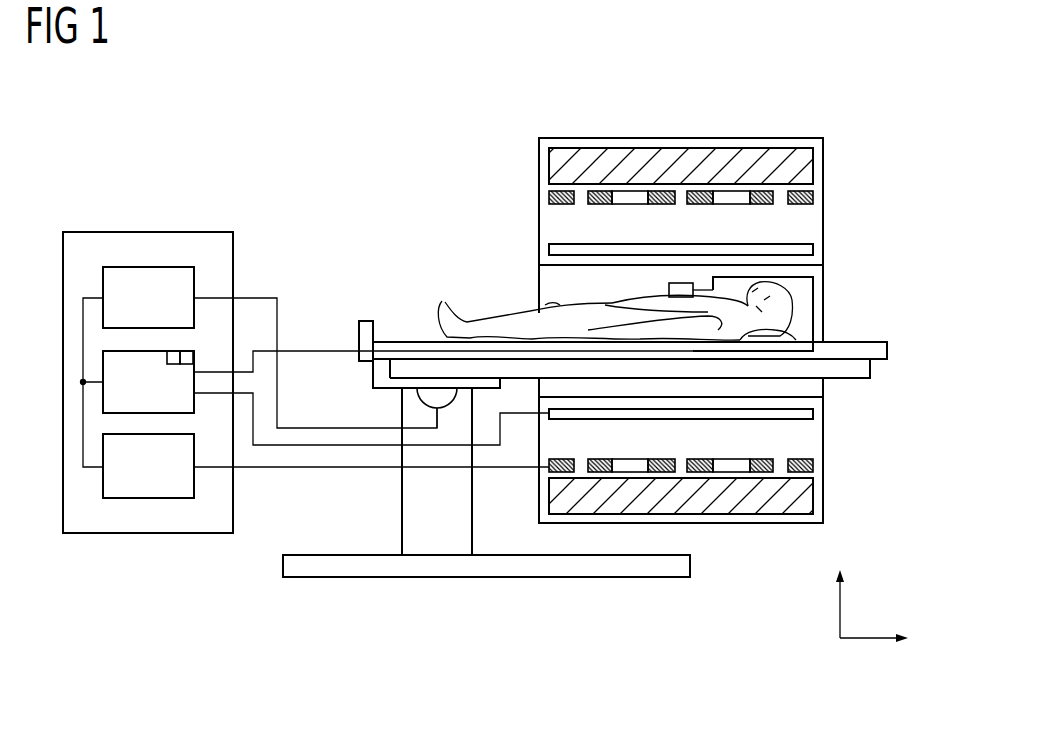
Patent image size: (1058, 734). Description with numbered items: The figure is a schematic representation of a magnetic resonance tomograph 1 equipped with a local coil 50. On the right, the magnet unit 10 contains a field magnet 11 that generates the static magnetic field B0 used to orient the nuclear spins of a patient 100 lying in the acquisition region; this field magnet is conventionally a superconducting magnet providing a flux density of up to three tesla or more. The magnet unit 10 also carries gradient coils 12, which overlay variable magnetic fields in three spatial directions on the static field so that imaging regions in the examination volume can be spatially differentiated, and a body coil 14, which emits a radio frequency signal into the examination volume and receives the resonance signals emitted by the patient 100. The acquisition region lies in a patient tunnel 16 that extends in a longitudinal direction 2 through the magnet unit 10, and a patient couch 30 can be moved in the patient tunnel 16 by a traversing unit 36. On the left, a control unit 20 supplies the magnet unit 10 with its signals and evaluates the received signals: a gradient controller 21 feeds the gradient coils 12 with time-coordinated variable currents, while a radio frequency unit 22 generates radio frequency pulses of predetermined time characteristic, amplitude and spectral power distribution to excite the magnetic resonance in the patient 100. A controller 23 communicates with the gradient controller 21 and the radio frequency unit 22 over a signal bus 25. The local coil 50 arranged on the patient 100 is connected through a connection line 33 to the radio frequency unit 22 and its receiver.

The magnetic resonance tomograph 1 is at (489, 98).
The longitudinal direction 2 is at (869, 637).
The magnet unit 10 is at (819, 126).
The field magnet 11 is at (683, 163).
The gradient coils 12 is at (760, 190).
The body coil 14 is at (815, 249).
The patient tunnel 16 is at (845, 291).
The control unit 20 is at (219, 220).
The gradient controller 21 is at (163, 482).
The radio frequency unit 22 is at (163, 397).
The controller 23 is at (163, 313).
The signal bus 25 is at (82, 340).
The patient couch 30 is at (517, 388).
The connection line 33 is at (323, 349).
The traversing unit 36 is at (419, 403).
The local coil 50 is at (681, 283).
The patient 100 is at (470, 325).